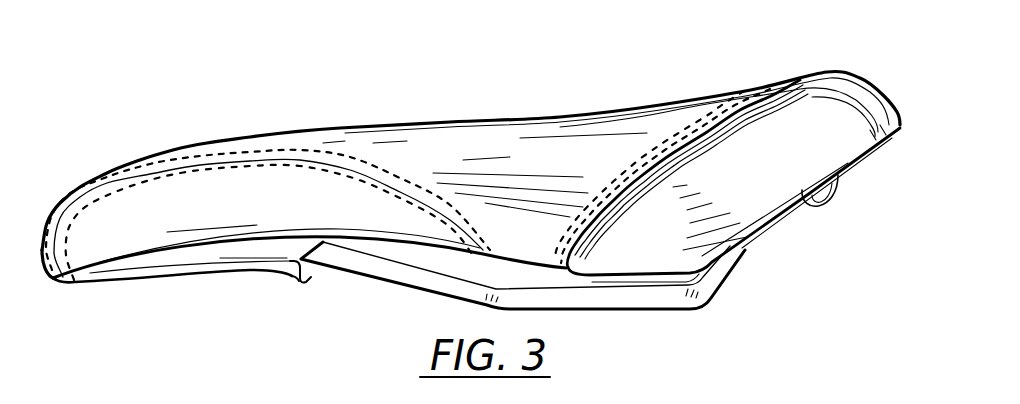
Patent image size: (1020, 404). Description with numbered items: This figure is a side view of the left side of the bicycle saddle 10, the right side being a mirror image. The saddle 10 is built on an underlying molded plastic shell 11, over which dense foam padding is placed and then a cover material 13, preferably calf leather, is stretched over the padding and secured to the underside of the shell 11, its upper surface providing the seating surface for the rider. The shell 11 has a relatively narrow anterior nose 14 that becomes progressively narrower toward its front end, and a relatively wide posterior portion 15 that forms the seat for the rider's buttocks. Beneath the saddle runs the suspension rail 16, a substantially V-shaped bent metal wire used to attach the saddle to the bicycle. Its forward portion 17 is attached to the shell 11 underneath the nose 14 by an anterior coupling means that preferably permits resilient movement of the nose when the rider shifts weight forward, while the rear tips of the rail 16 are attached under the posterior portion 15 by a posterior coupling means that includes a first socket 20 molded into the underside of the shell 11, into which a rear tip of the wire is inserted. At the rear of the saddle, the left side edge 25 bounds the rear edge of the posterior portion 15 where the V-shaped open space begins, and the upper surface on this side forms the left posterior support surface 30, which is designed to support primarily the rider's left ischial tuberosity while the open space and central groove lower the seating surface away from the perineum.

The bicycle saddle 10 is at (281, 88).
The shell 11 is at (257, 266).
The cover material 13 is at (545, 118).
The nose 14 is at (173, 148).
The posterior portion 15 is at (766, 84).
The suspension rail 16 is at (647, 300).
The forward portion 17 is at (337, 273).
The first socket 20 is at (824, 205).
The left side edge 25 is at (918, 77).
The left posterior support surface 30 is at (700, 100).